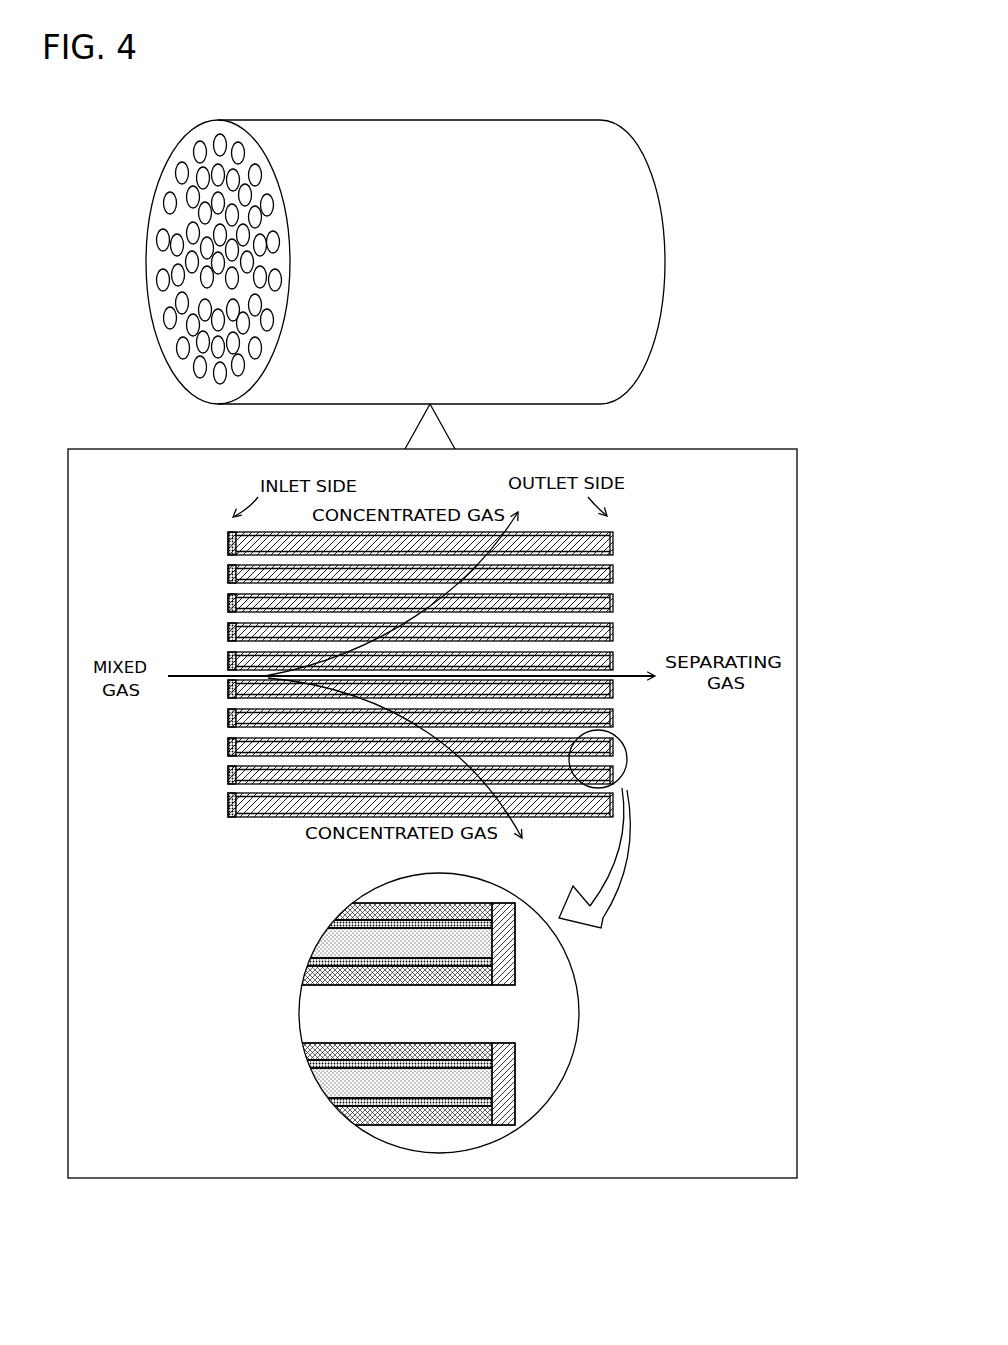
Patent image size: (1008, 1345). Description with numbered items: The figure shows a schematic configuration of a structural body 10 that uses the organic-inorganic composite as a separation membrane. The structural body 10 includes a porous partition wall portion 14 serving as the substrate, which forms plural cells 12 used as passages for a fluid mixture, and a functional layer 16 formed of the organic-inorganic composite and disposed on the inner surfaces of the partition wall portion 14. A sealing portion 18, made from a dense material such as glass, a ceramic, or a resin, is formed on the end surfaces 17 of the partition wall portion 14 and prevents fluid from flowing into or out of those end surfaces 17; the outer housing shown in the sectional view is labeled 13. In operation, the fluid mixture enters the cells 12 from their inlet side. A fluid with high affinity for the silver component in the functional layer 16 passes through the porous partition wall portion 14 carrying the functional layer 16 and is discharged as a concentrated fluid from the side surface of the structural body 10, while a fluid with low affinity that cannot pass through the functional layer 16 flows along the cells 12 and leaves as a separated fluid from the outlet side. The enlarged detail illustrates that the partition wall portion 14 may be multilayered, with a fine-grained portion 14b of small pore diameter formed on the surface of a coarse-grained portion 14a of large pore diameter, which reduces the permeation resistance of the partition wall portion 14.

The structural body 10 is at (594, 100).
The cells 12 is at (162, 277).
The housing plate 13 is at (255, 544).
The partition wall portion 14 is at (172, 182).
The coarse-grained portion 14a is at (328, 938).
The fine-grained portion 14b is at (337, 923).
The functional layer 16 is at (268, 738).
The end surfaces 17 is at (228, 768).
The sealing portion 18 is at (228, 780).